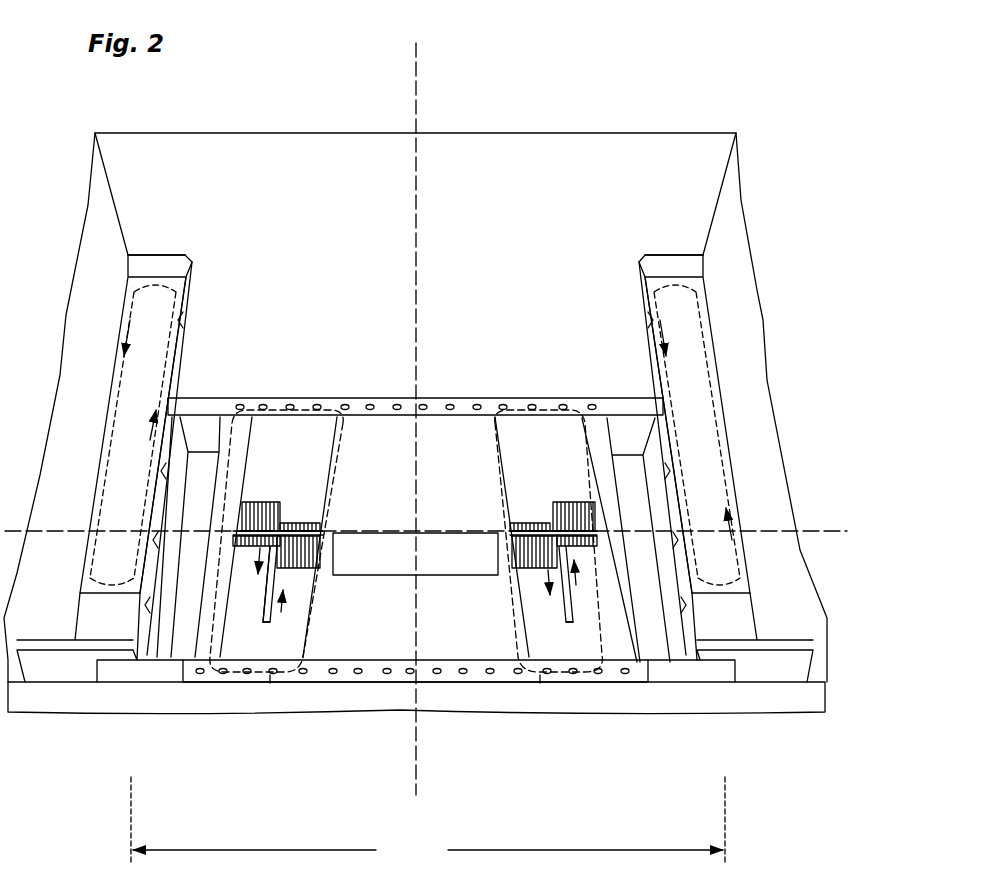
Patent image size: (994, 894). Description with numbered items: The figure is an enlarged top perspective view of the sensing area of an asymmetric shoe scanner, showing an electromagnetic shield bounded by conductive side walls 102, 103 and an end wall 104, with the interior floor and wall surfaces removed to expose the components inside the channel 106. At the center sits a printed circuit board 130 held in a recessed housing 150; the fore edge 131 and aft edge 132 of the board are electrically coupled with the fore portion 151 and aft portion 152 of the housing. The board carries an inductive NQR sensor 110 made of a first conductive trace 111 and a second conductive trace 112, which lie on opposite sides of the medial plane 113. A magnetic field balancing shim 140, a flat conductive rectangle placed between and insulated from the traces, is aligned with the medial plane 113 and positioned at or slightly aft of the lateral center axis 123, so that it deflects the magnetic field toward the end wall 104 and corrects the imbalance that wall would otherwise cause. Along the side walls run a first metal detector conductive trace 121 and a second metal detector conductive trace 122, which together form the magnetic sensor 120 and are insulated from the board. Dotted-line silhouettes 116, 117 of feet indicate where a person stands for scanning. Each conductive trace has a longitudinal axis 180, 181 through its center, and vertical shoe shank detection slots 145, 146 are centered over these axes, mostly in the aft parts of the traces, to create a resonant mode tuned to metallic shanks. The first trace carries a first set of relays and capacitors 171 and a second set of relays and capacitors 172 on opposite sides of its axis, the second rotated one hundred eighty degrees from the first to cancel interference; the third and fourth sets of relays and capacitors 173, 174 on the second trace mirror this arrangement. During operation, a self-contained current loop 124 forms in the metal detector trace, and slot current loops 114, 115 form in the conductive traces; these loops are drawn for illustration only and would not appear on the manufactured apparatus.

The first side wall 102 is at (69, 608).
The second side wall 103 is at (804, 608).
The end wall 104 is at (534, 208).
The channel 106 is at (428, 821).
The inductive NQR sensor 110 is at (338, 394).
The first conductive trace 111 is at (242, 648).
The second conductive trace 112 is at (582, 648).
The medial plane 113 is at (417, 80).
The slot current loop 114 is at (284, 621).
The slot current loop 115 is at (724, 377).
The dotted-line silhouette of foot 116 is at (271, 684).
The dotted-line silhouette of foot 117 is at (538, 683).
The magnetic sensor 120 is at (207, 255).
The first metal detector conductive trace 121 is at (148, 293).
The second metal detector conductive trace 122 is at (678, 287).
The lateral center axis 123 is at (817, 529).
The current loop 124 is at (113, 410).
The printed circuit board 130 is at (467, 499).
The fore edge 131 is at (577, 400).
The aft edge 132 is at (637, 673).
The magnetic field balancing shim 140 is at (410, 566).
The shoe shank detection slot 145 is at (269, 630).
The shoe shank detection slot 146 is at (560, 626).
The recessed housing 150 is at (203, 463).
The fore portion 151 is at (188, 397).
The aft portion 152 is at (142, 673).
The first set of relays and capacitors 171 is at (257, 498).
The second set of relays and capacitors 172 is at (303, 520).
The third set of relays and capacitors 173 is at (570, 498).
The fourth set of relays and capacitors 174 is at (522, 520).
The longitudinal axis 180 is at (297, 408).
The longitudinal axis 181 is at (533, 398).